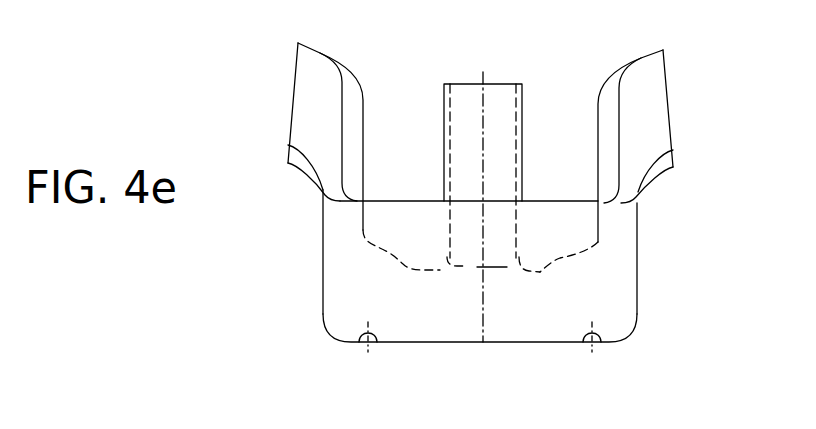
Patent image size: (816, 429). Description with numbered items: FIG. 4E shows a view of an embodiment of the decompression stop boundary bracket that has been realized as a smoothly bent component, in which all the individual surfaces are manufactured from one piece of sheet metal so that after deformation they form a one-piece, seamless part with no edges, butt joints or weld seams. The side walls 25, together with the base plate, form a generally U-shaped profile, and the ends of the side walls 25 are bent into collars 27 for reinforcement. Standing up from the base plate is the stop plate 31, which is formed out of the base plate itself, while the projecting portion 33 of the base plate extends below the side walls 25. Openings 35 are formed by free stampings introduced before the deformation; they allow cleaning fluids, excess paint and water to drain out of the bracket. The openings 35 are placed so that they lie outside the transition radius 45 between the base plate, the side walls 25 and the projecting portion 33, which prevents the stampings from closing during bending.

The side walls 25 is at (637, 239).
The collars 27 is at (308, 90).
The stop plate 31 is at (505, 97).
The projecting portion 33 is at (602, 275).
The openings 35 is at (613, 345).
The transition radius 45 is at (637, 327).